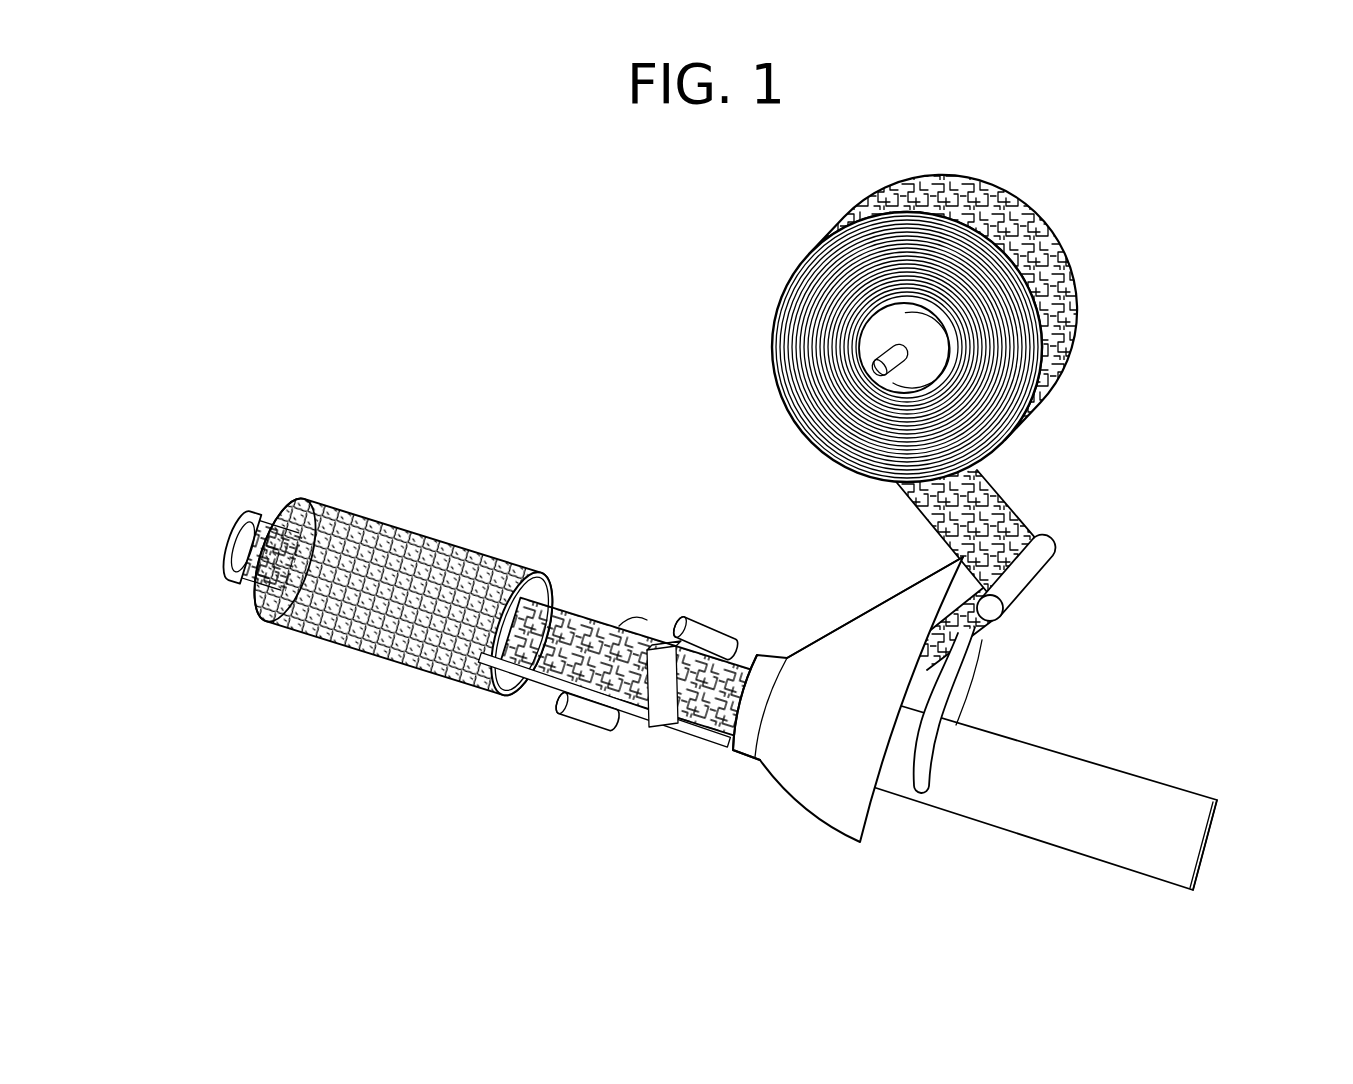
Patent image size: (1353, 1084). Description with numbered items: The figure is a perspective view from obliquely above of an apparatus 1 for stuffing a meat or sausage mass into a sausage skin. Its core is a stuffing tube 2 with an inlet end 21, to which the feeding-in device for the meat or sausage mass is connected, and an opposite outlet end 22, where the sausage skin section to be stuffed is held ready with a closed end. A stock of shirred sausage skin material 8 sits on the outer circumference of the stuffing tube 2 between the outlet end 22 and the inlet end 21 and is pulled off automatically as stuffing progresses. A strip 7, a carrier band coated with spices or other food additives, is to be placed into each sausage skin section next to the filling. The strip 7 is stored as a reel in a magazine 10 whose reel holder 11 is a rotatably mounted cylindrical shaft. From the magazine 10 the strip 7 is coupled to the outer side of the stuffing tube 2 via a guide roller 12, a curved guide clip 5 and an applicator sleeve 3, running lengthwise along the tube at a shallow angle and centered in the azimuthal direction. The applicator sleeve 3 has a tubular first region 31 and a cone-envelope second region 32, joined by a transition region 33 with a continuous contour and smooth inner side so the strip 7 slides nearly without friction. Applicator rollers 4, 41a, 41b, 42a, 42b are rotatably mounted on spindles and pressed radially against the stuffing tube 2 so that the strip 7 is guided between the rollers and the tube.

The apparatus 1 is at (596, 358).
The stuffing tube 2 is at (1103, 787).
The applicator sleeve 3 is at (890, 583).
The applicator roller 4 is at (648, 735).
The curved guide clip 5 is at (968, 670).
The strip 7 is at (1000, 497).
The sausage skin material 8 is at (398, 538).
The magazine 10 is at (1127, 300).
The reel holder 11 is at (877, 340).
The guide roller 12 is at (1045, 533).
The inlet end 21 is at (1213, 843).
The outlet end 22 is at (212, 540).
The first region 31 is at (733, 752).
The second region 32 is at (848, 807).
The transition region 33 is at (760, 767).
The applicator roller 41a is at (604, 694).
The applicator roller 41b is at (707, 630).
The applicator roller 42a is at (575, 722).
The applicator roller 42b is at (622, 618).